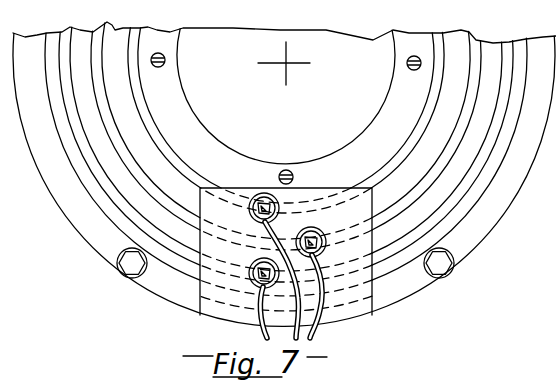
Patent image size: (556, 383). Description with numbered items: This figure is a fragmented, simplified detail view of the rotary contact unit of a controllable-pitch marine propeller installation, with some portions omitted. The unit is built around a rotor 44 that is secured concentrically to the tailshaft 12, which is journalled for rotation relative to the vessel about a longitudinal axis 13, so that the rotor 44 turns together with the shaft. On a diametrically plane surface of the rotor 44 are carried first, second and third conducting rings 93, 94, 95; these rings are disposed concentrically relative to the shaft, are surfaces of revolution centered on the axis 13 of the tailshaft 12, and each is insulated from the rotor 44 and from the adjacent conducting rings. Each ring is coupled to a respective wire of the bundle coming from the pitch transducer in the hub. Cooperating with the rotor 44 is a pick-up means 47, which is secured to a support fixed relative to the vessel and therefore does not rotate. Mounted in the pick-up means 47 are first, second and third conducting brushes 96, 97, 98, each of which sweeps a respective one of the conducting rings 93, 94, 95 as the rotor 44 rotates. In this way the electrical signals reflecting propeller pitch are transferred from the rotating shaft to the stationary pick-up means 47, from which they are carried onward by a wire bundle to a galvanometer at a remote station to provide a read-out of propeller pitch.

The tailshaft 12 is at (270, 133).
The longitudinal axis 13 is at (289, 64).
The rotor 44 is at (127, 12).
The pick-up means 47 is at (352, 309).
The first conducting ring 93 is at (428, 117).
The second conducting ring 94 is at (438, 157).
The third conducting ring 95 is at (483, 171).
The first brush 96 is at (296, 179).
The second brush 97 is at (316, 221).
The third brush 98 is at (249, 298).